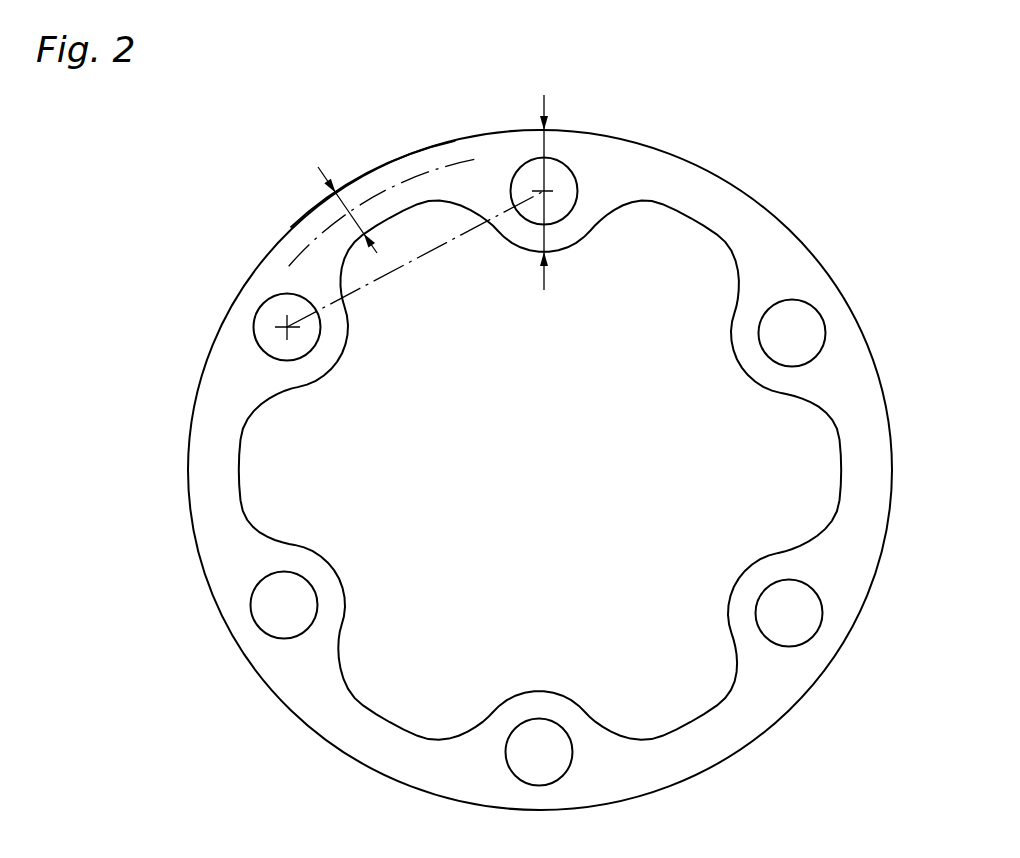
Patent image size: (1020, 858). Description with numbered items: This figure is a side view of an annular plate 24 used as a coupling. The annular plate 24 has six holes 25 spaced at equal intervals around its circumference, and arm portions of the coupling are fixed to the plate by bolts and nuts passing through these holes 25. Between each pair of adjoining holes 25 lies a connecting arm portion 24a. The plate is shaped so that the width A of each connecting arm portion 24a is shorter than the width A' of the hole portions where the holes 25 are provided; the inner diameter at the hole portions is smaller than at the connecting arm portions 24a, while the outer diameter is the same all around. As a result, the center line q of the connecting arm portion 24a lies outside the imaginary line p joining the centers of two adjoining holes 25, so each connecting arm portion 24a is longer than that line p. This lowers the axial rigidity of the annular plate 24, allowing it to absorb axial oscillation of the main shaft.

The annular plate 24 is at (768, 173).
The connecting arm portion 24a is at (407, 160).
The hole 25 is at (258, 310).
The width of connecting arm portion A is at (319, 196).
The width of hole portion A' is at (588, 192).
The imaginary line p is at (428, 253).
The center line of connecting arm portion q is at (377, 192).